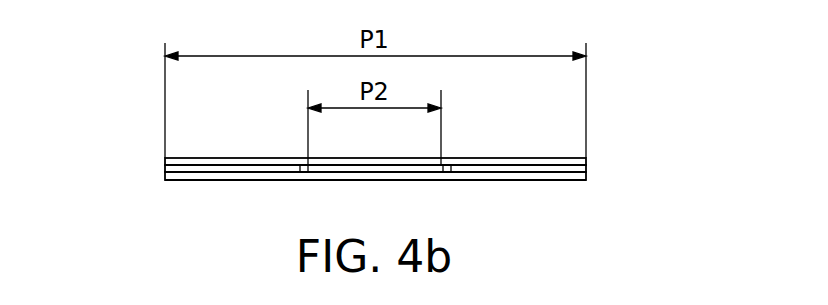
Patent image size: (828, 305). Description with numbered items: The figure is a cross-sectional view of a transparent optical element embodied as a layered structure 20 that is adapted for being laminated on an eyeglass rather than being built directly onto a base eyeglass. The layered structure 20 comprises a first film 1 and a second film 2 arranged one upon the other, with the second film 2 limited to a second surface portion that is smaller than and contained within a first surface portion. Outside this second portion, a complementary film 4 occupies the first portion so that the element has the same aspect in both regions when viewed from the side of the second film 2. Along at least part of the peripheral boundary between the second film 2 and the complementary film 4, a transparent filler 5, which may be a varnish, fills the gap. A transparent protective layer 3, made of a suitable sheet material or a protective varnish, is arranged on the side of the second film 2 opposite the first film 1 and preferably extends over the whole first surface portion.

The layered structure 20 is at (317, 159).
The transparent protective layer 3 is at (179, 158).
The complementary film 4 is at (176, 165).
The first film 1 is at (345, 188).
The transparent filler 5 is at (303, 166).
The second film 2 is at (333, 168).